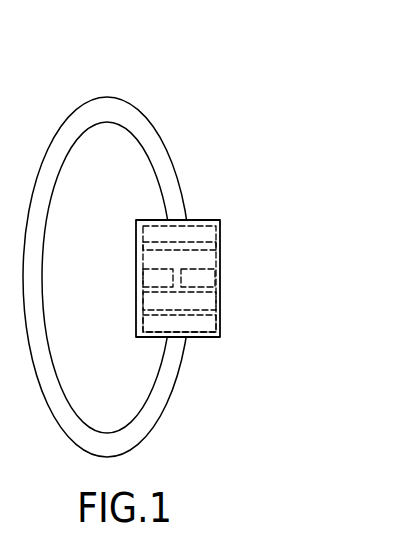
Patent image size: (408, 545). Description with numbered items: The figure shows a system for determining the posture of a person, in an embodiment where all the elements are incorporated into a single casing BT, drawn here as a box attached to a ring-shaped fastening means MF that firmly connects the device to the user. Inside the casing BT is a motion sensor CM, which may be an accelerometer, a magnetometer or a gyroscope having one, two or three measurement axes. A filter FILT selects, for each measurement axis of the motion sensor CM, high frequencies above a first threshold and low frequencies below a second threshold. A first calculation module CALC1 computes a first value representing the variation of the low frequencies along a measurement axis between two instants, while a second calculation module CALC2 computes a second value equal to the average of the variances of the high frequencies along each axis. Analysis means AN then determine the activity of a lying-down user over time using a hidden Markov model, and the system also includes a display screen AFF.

The mounting frame / ring MF is at (153, 126).
The casing BT is at (200, 337).
The motion sensor CM is at (208, 235).
The filter FILT is at (208, 253).
The first calculation module CALC1 is at (152, 278).
The second calculation module CALC2 is at (208, 279).
The analysis means AN is at (208, 303).
The display screen AFF is at (208, 328).